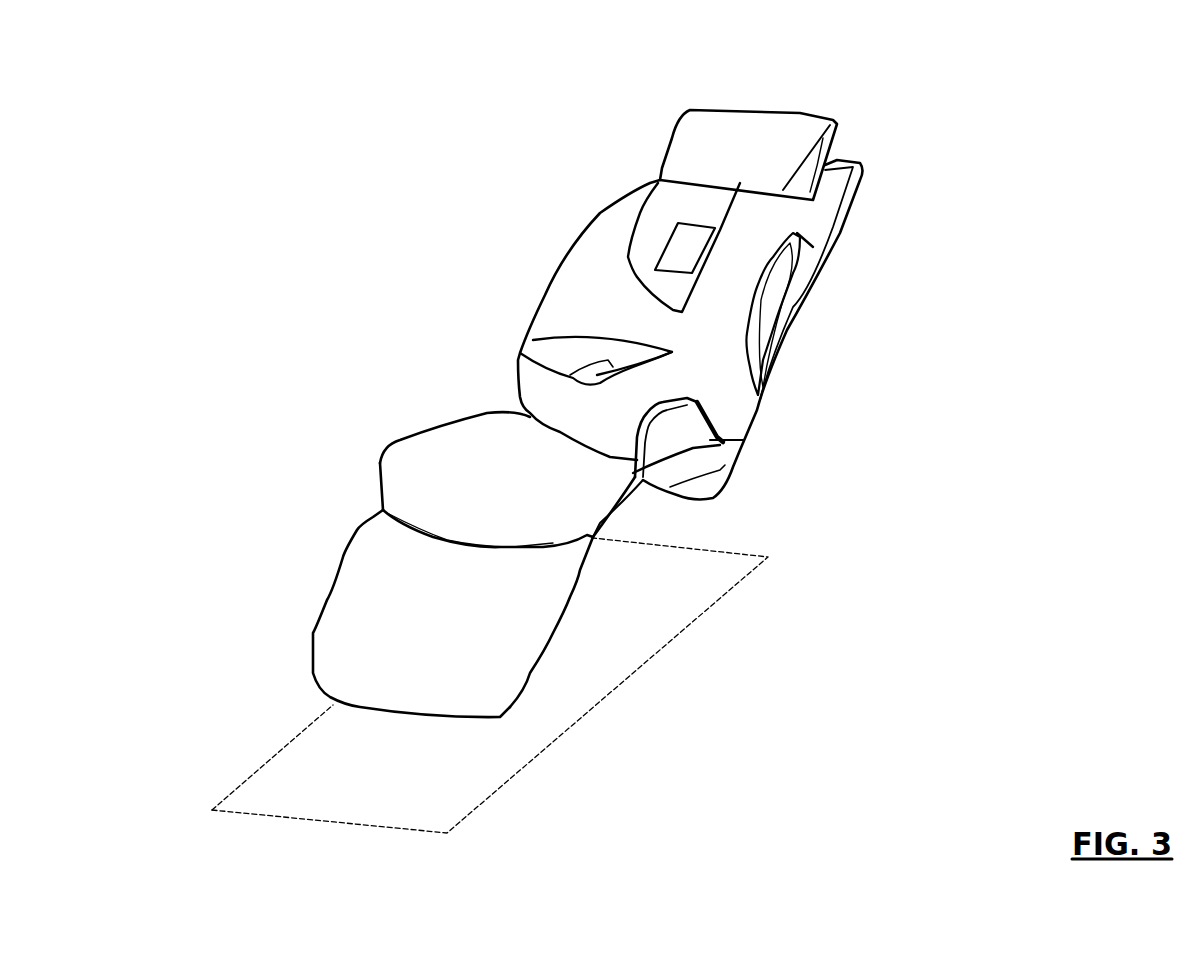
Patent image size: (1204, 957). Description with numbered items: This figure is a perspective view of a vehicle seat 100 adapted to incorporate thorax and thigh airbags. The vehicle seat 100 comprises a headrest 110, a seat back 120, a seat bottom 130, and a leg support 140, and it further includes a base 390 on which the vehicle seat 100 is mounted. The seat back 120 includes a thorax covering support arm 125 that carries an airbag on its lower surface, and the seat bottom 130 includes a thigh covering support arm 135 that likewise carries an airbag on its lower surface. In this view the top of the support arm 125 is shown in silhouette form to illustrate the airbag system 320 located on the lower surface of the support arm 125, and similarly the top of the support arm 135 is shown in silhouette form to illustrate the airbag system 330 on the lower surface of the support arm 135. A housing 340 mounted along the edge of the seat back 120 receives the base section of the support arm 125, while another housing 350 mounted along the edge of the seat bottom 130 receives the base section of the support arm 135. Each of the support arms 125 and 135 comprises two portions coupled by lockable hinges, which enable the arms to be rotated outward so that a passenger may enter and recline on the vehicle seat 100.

The vehicle seat 100 is at (1004, 172).
The headrest 110 is at (713, 127).
The seat back 120 is at (573, 287).
The thorax covering support arm 125 is at (667, 220).
The seat bottom 130 is at (433, 463).
The thigh covering support arm 135 is at (543, 360).
The leg support 140 is at (338, 615).
The airbag system 320 is at (685, 254).
The airbag system 330 is at (650, 373).
The housing 340 is at (787, 295).
The housing 350 is at (683, 438).
The base 390 is at (562, 708).